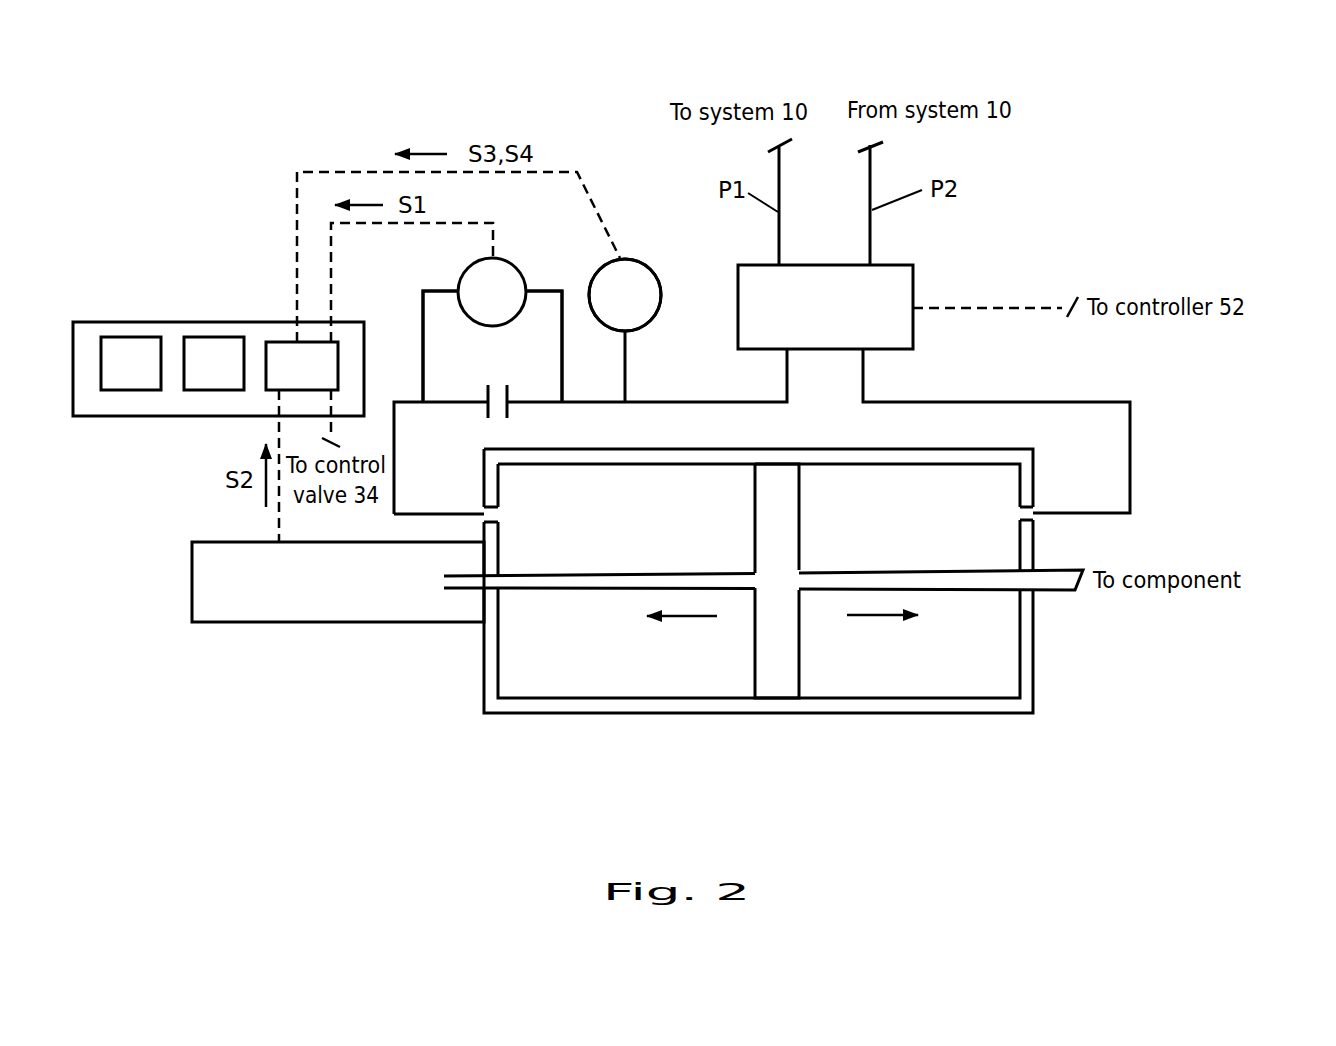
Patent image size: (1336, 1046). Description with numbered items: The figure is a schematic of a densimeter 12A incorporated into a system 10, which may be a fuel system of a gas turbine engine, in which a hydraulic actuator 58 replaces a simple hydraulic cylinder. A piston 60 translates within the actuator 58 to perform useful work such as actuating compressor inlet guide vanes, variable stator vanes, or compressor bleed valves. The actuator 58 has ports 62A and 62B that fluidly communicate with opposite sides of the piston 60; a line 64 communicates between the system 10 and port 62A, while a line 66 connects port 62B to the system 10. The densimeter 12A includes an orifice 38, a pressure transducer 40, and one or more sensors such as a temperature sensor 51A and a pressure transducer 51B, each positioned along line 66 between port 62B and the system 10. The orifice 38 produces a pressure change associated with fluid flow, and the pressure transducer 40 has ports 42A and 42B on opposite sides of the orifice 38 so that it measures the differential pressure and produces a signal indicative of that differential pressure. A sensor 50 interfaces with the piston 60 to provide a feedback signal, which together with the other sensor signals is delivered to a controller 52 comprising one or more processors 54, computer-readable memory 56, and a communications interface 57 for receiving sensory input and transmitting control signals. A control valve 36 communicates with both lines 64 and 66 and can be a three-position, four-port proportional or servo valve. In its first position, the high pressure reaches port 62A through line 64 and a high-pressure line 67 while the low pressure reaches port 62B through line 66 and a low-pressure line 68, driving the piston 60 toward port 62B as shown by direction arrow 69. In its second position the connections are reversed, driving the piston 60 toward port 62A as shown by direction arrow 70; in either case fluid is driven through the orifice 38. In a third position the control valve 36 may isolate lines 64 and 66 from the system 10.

The system 10 is at (1155, 180).
The densimeter 12A is at (1228, 420).
The control valve 36 is at (913, 265).
The orifice 38 is at (500, 423).
The pressure transducer 40 is at (478, 304).
The port 42A is at (463, 273).
The port 42B is at (535, 290).
The sensor 50 is at (309, 589).
The temperature sensor 51A is at (653, 309).
The pressure transducer 51B is at (653, 273).
The controller 52 is at (126, 321).
The processor 54 is at (117, 375).
The computer-readable memory 56 is at (200, 375).
The communications interface 57 is at (288, 375).
The hydraulic actuator 58 is at (740, 715).
The piston 60 is at (808, 572).
The port 62A is at (1033, 512).
The port 62B is at (490, 508).
The line 64 is at (1037, 402).
The line 66 is at (667, 400).
The high-pressure line 67 is at (872, 170).
The low-pressure line 68 is at (778, 177).
The direction arrow 69 is at (682, 634).
The direction arrow 70 is at (882, 631).